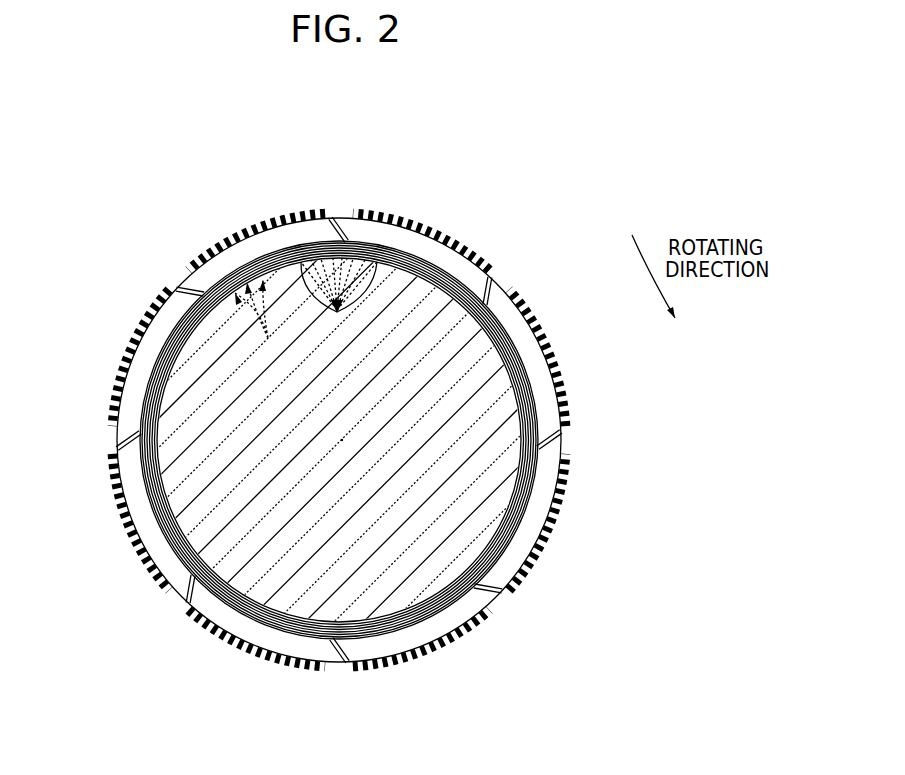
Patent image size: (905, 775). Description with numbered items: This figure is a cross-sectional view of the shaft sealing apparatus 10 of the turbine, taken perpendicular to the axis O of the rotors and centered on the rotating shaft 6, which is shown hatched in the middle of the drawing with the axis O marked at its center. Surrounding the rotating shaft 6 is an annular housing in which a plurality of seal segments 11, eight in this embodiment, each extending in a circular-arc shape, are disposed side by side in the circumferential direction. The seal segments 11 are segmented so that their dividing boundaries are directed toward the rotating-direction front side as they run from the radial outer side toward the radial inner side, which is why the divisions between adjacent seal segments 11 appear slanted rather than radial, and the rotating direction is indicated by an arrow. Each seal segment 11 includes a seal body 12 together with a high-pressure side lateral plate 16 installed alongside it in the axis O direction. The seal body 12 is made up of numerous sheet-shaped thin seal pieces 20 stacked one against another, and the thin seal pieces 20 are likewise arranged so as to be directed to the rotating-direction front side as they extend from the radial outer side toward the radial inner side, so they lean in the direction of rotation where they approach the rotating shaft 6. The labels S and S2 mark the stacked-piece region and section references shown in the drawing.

The shaft sealing apparatus 10 is at (602, 218).
The rotating shaft 6 is at (487, 347).
The seal segment 11 is at (232, 222).
The seal body 12 is at (292, 242).
The high-pressure side lateral plate 16 is at (243, 235).
The thin seal piece 20 is at (339, 304).
The magnetic pole S is at (257, 327).
The magnetic pole S2 is at (403, 218).
The axis O is at (345, 437).